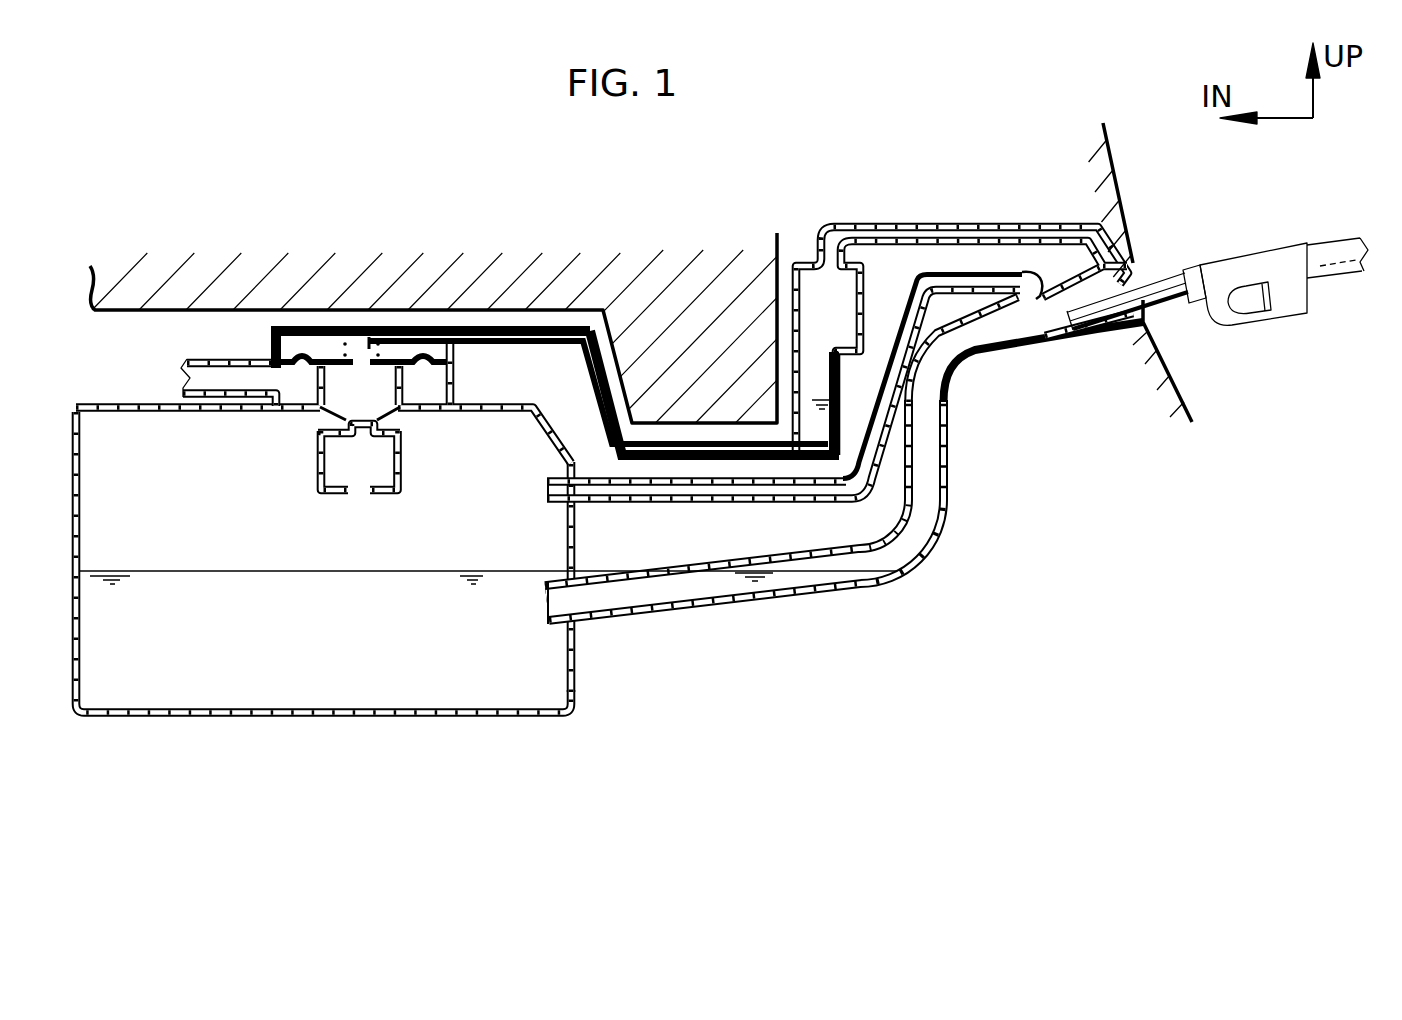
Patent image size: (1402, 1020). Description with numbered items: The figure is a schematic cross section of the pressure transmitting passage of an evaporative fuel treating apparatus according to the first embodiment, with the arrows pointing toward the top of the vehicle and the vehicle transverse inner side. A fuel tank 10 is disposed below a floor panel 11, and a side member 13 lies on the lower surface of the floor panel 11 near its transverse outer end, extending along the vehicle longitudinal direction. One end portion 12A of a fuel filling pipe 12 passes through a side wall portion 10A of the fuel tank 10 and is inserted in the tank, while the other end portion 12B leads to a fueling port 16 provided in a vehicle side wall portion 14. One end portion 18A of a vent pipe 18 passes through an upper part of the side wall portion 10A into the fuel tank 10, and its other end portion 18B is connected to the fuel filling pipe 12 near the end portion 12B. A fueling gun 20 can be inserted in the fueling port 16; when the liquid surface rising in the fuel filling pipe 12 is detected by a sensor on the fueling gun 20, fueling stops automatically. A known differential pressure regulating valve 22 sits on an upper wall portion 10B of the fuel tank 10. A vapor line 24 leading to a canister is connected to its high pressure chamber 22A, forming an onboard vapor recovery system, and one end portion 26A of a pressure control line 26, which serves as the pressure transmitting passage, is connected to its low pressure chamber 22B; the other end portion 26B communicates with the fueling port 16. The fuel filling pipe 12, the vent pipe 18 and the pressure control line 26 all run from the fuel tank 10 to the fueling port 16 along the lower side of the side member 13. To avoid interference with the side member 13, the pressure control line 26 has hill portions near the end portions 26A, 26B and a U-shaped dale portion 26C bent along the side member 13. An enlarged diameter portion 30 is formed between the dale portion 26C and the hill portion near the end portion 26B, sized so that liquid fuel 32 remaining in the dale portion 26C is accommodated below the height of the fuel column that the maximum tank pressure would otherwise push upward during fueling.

The fuel tank 10 is at (570, 730).
The side wall portion 10A is at (577, 675).
The upper wall portion 10B is at (488, 404).
The floor panel 11 is at (268, 312).
The fuel filling pipe 12 is at (849, 592).
The one end portion of the fuel filling pipe 12A is at (560, 628).
The another end portion of the fuel filling pipe 12B is at (1095, 333).
The side member 13 is at (757, 437).
The vehicle side wall portion 14 is at (1120, 178).
The fueling port 16 is at (1144, 318).
The vent pipe 18 is at (723, 508).
The one end portion of the vent pipe 18A is at (550, 503).
The another end portion of the vent pipe 18B is at (1043, 298).
The fueling gun 20 is at (1280, 242).
The differential pressure regulating valve 22 is at (462, 362).
The high pressure chamber 22A is at (422, 386).
The low pressure chamber 22B is at (432, 344).
The vapor line 24 is at (223, 358).
The pressure control line 26 is at (925, 218).
The one end portion of the pressure control line 26A is at (516, 325).
The another end portion of the pressure control line 26B is at (1037, 221).
The dale portion 26C is at (713, 440).
The enlarged diameter portion 30 is at (803, 248).
The liquid fuel 32 is at (826, 398).